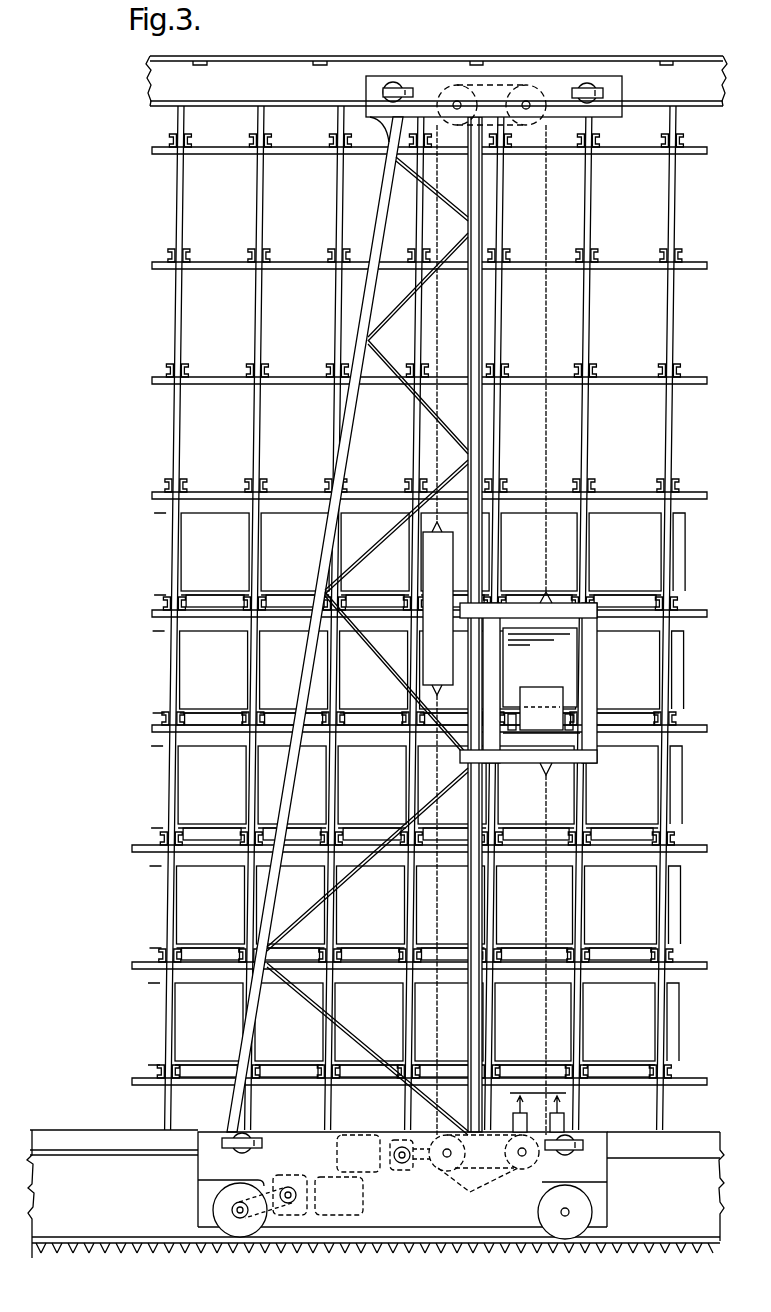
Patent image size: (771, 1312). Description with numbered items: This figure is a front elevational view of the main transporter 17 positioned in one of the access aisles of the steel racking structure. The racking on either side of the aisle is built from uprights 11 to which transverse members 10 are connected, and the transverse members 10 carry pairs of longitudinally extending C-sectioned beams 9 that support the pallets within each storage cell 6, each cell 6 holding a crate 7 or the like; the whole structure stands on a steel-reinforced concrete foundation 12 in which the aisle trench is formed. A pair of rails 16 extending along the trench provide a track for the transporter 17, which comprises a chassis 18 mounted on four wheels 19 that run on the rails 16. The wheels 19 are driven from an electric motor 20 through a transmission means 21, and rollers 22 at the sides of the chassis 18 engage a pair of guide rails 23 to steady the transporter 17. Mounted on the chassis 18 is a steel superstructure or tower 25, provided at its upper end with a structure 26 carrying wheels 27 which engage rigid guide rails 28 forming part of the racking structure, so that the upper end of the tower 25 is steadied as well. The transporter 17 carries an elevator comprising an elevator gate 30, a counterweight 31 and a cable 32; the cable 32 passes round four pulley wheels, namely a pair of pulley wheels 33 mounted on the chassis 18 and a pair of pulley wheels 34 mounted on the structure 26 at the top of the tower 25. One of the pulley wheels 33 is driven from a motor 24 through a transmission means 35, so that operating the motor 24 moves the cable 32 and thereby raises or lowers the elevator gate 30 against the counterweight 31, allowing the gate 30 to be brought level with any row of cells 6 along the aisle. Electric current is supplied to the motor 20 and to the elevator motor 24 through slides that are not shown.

The storage cell 6 is at (191, 190).
The crate 7 is at (193, 551).
The C-sectioned beam 9 is at (324, 376).
The transverse member 10 is at (165, 385).
The upright 11 is at (672, 322).
The steel-reinforced concrete foundation 12 is at (76, 1283).
The rail 16 is at (106, 1234).
The main transporter 17 is at (188, 1174).
The chassis 18 is at (476, 1222).
The wheel 19 is at (222, 1205).
The electric motor 20 is at (364, 1198).
The transmission means 21 is at (297, 1218).
The roller 22 is at (236, 1150).
The guide rail 23 is at (96, 1140).
The motor 24 is at (336, 1157).
The tower 25 is at (272, 784).
The structure 26 is at (443, 76).
The wheel 27 is at (392, 82).
The rigid guide rail 28 is at (694, 76).
The elevator gate 30 is at (600, 658).
The counterweight 31 is at (430, 570).
The cable 32 is at (548, 903).
The pulley wheel 33 is at (484, 1173).
The pulley wheel 34 is at (526, 84).
The transmission means 35 is at (390, 1136).